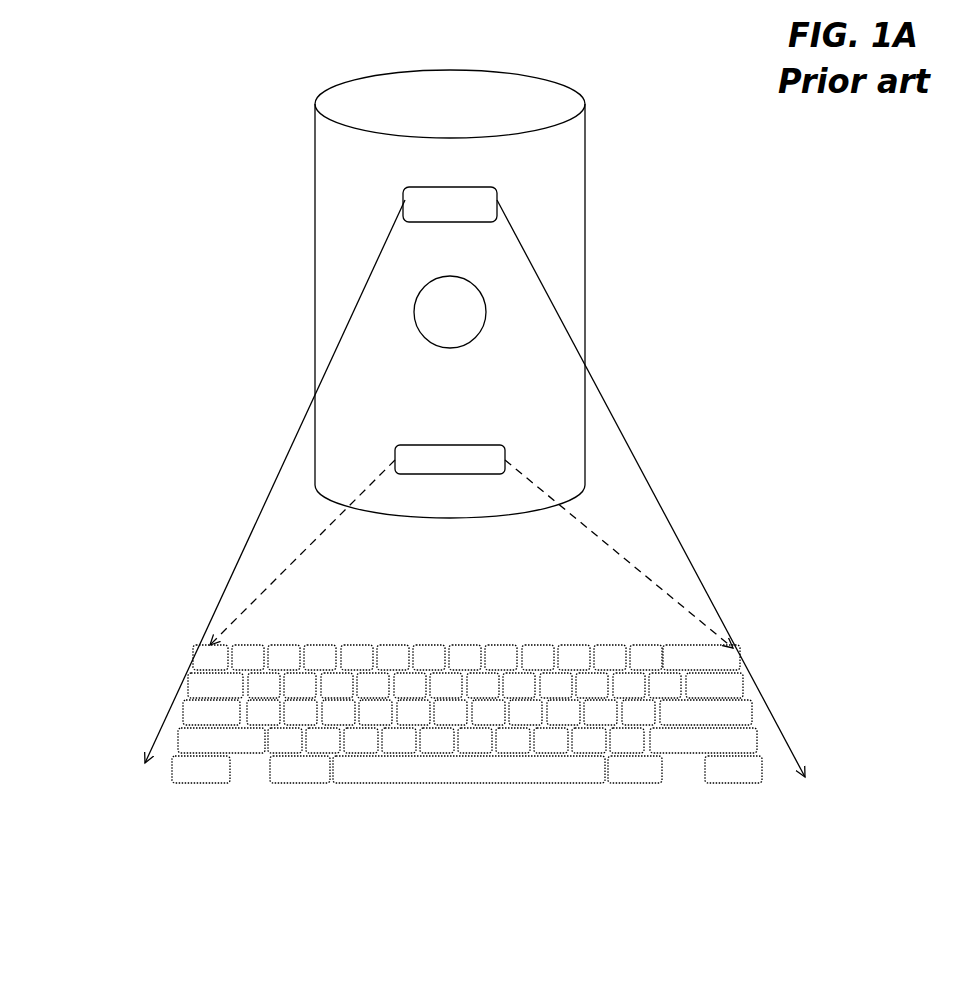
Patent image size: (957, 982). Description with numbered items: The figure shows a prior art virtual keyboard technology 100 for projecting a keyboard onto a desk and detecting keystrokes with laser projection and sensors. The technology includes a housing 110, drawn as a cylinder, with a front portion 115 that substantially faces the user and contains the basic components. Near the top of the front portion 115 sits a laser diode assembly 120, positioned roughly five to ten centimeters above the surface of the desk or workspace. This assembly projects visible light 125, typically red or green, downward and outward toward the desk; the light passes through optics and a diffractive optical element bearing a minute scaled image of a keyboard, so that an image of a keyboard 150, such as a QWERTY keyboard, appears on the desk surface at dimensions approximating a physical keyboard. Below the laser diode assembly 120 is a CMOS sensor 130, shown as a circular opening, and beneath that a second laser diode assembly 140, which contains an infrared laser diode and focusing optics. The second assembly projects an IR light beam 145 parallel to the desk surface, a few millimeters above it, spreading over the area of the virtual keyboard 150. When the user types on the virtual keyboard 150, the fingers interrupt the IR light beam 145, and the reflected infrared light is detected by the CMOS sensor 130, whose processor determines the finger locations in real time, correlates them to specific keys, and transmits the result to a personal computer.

The virtual keyboard technology 100 is at (300, 123).
The housing 110 is at (312, 224).
The front portion 115 is at (355, 190).
The laser diode assembly 120 is at (520, 195).
The visible light 125 is at (335, 337).
The CMOS sensor 130 is at (520, 301).
The second laser diode assembly 140 is at (532, 458).
The IR light beam 145 is at (302, 541).
The virtual keyboard 150 is at (757, 650).